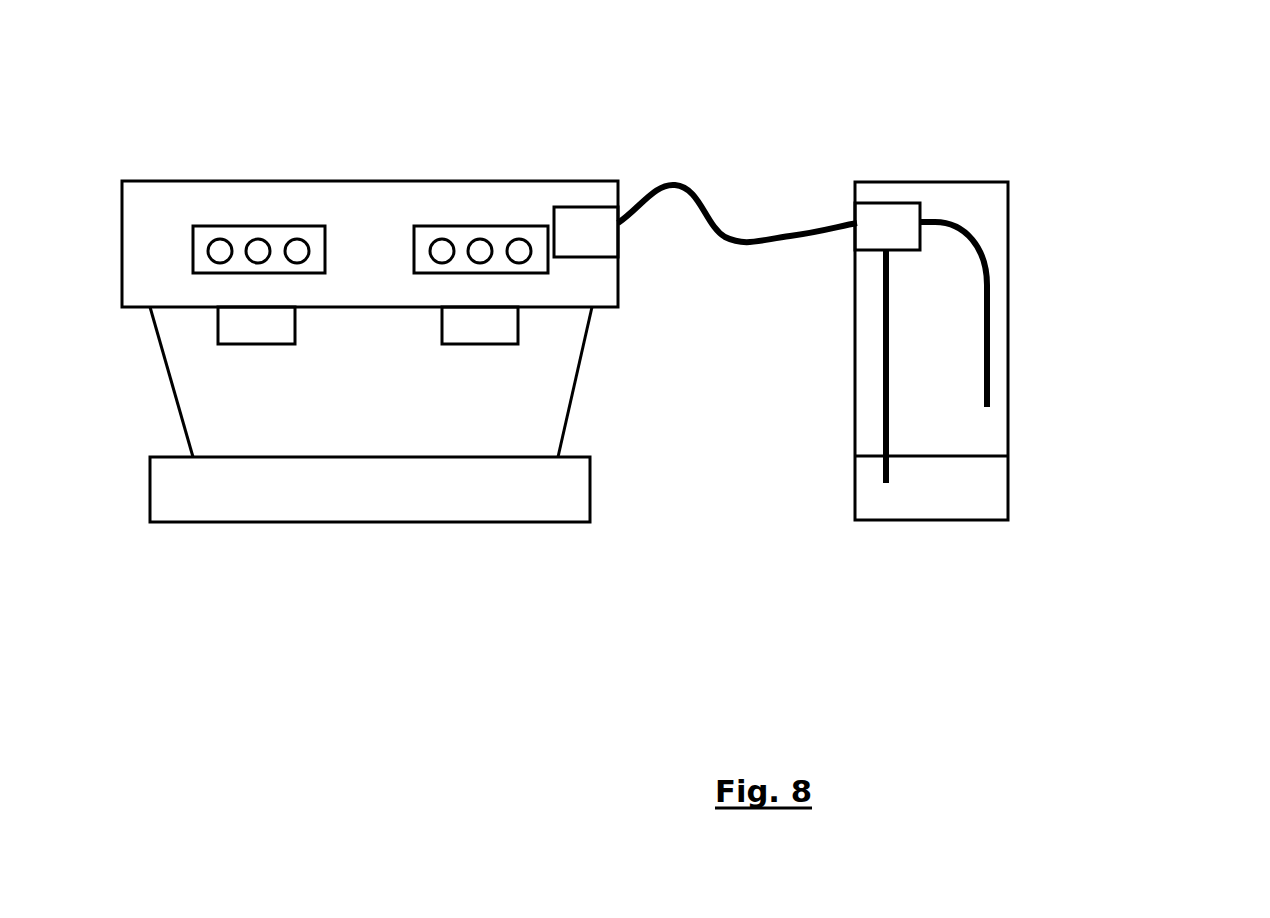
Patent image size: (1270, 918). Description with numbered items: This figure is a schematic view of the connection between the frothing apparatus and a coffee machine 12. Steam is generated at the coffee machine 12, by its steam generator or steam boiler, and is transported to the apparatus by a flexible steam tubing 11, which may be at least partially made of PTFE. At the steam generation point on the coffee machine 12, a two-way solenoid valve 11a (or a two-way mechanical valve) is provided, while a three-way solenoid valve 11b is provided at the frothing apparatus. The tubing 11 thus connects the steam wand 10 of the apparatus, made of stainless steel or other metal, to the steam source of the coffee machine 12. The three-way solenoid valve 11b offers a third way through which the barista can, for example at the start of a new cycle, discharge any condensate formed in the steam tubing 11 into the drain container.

The coffee machine 12 is at (440, 150).
The 2-way solenoid valve 11a is at (588, 232).
The tubing 11 is at (758, 243).
The 3-way solenoid valve 11b is at (887, 213).
The steam wand 10 is at (977, 240).